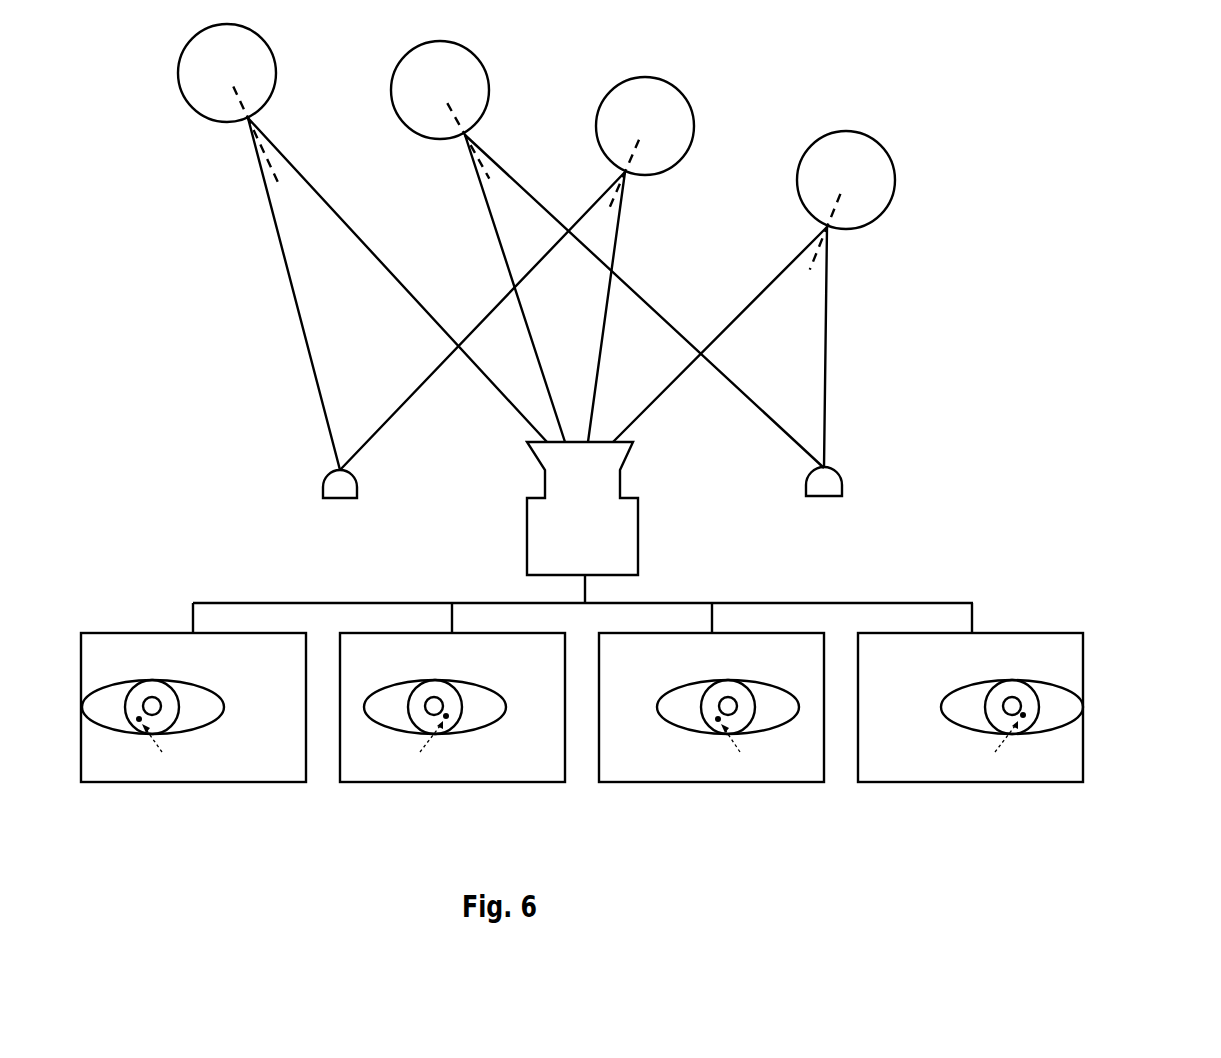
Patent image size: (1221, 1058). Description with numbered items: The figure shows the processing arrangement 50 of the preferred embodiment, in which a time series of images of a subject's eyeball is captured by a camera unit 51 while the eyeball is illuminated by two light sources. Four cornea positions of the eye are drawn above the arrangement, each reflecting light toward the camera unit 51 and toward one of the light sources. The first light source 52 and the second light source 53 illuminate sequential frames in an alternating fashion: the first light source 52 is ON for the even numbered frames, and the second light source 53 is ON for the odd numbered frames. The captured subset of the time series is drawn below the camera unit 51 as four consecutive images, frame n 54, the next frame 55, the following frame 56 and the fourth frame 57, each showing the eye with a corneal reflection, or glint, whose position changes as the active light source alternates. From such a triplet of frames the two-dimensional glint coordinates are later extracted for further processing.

The eye tracking system with alternating light sources 50 is at (965, 120).
The camera unit 51 is at (635, 485).
The light source 0 52 is at (354, 472).
The light source 1 53 is at (838, 470).
The frame n 54 is at (270, 805).
The frame n+1 55 is at (541, 806).
The frame n+2 56 is at (800, 806).
The frame n+3 57 is at (1058, 805).